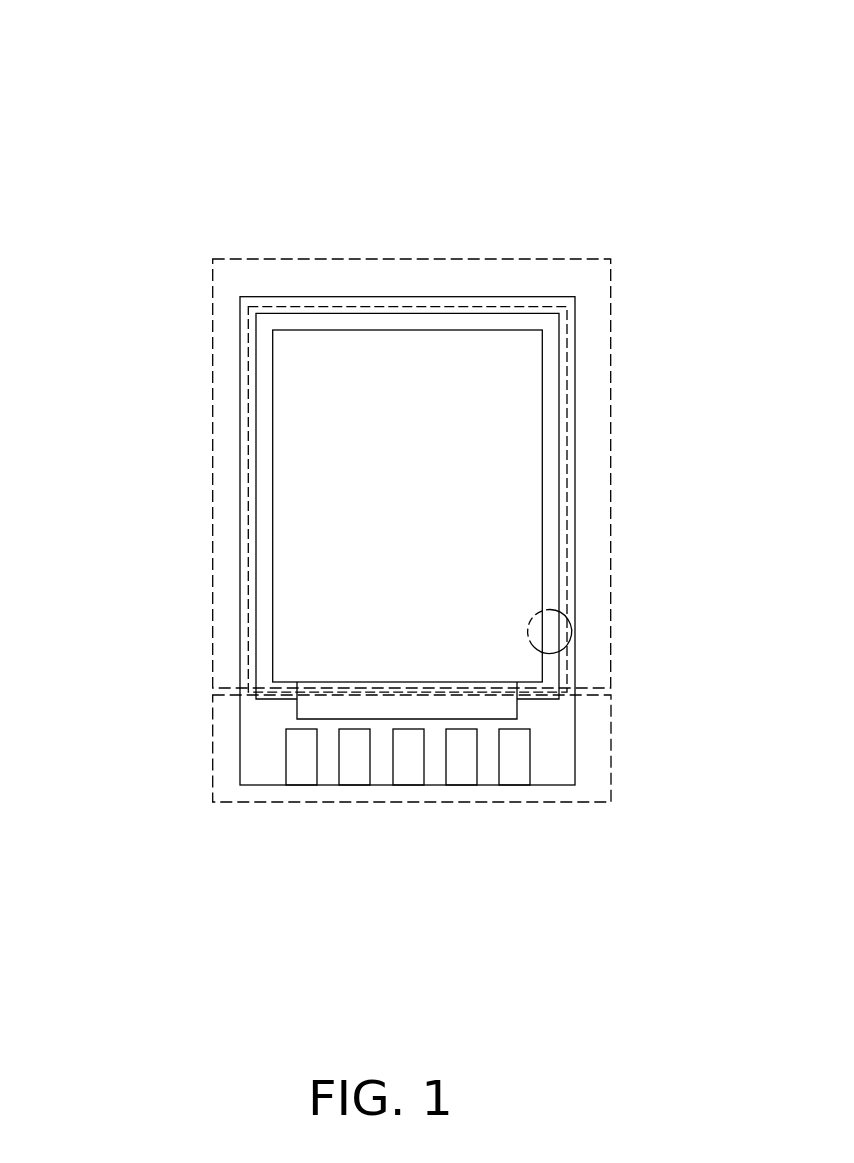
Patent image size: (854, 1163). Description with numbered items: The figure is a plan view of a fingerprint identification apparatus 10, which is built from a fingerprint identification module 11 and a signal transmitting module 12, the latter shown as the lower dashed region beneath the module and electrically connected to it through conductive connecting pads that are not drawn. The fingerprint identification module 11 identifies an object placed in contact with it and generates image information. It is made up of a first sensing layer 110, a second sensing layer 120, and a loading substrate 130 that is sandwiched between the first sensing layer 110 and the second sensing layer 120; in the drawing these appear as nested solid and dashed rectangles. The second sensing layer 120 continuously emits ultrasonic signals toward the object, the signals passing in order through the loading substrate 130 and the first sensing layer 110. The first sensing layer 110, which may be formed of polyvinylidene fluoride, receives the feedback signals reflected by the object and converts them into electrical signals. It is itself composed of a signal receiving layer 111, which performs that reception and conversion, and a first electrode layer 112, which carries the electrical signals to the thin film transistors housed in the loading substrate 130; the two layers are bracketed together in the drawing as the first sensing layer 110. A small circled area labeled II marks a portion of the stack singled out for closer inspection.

The fingerprint identification apparatus 10 is at (388, 54).
The fingerprint identification module 11 is at (611, 503).
The signal transmitting module 12 is at (611, 728).
The first sensing layer 110 is at (302, 506).
The signal receiving layer 111 is at (257, 480).
The first electrode layer 112 is at (272, 548).
The second sensing layer 120 is at (508, 306).
The loading substrate 130 is at (576, 375).
The enlarged detail region II is at (572, 633).